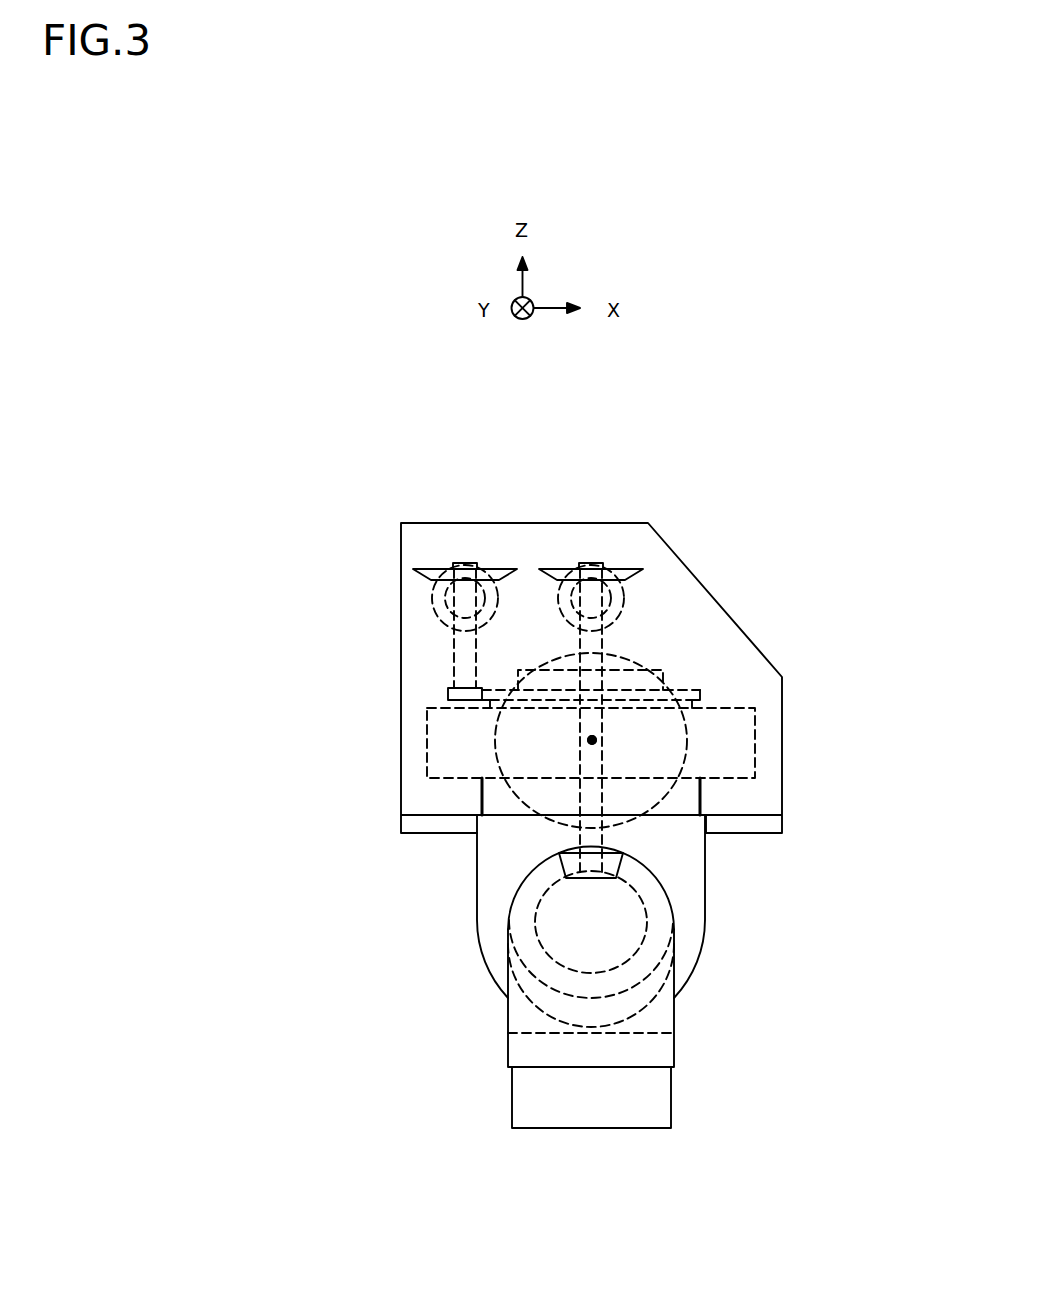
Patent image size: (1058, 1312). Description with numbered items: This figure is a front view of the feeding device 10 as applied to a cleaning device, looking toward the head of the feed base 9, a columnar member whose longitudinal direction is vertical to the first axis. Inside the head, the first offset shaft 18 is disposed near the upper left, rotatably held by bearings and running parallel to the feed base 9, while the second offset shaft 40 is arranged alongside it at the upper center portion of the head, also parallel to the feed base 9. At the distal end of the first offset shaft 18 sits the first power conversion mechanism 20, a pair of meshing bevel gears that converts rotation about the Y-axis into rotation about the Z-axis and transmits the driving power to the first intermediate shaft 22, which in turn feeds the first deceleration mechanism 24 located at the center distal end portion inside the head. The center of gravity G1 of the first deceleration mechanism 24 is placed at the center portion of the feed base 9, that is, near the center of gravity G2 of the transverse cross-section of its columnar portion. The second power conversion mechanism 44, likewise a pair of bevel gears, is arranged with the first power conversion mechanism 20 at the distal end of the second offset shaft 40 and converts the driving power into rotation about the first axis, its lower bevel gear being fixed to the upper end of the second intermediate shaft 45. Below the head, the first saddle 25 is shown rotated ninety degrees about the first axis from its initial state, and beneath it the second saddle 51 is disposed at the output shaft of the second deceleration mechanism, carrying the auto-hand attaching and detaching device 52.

The feeding device 10 is at (830, 410).
The first power conversion mechanism 20 is at (476, 559).
The first offset shaft 18 is at (433, 603).
The first intermediate shaft 22 is at (454, 645).
The second power conversion mechanism 44 is at (619, 560).
The second offset shaft 40 is at (611, 594).
The second intermediate shaft 45 is at (603, 639).
The feed base 9 is at (663, 687).
The center of gravity of the first deceleration mechanism G1 is at (595, 738).
The center of gravity of the feed base cross-section G2 is at (592, 740).
The first deceleration mechanism 24 is at (428, 742).
The first saddle 25 is at (706, 917).
The second saddle 51 is at (508, 1023).
The auto-hand attaching and detaching device 52 is at (587, 1130).